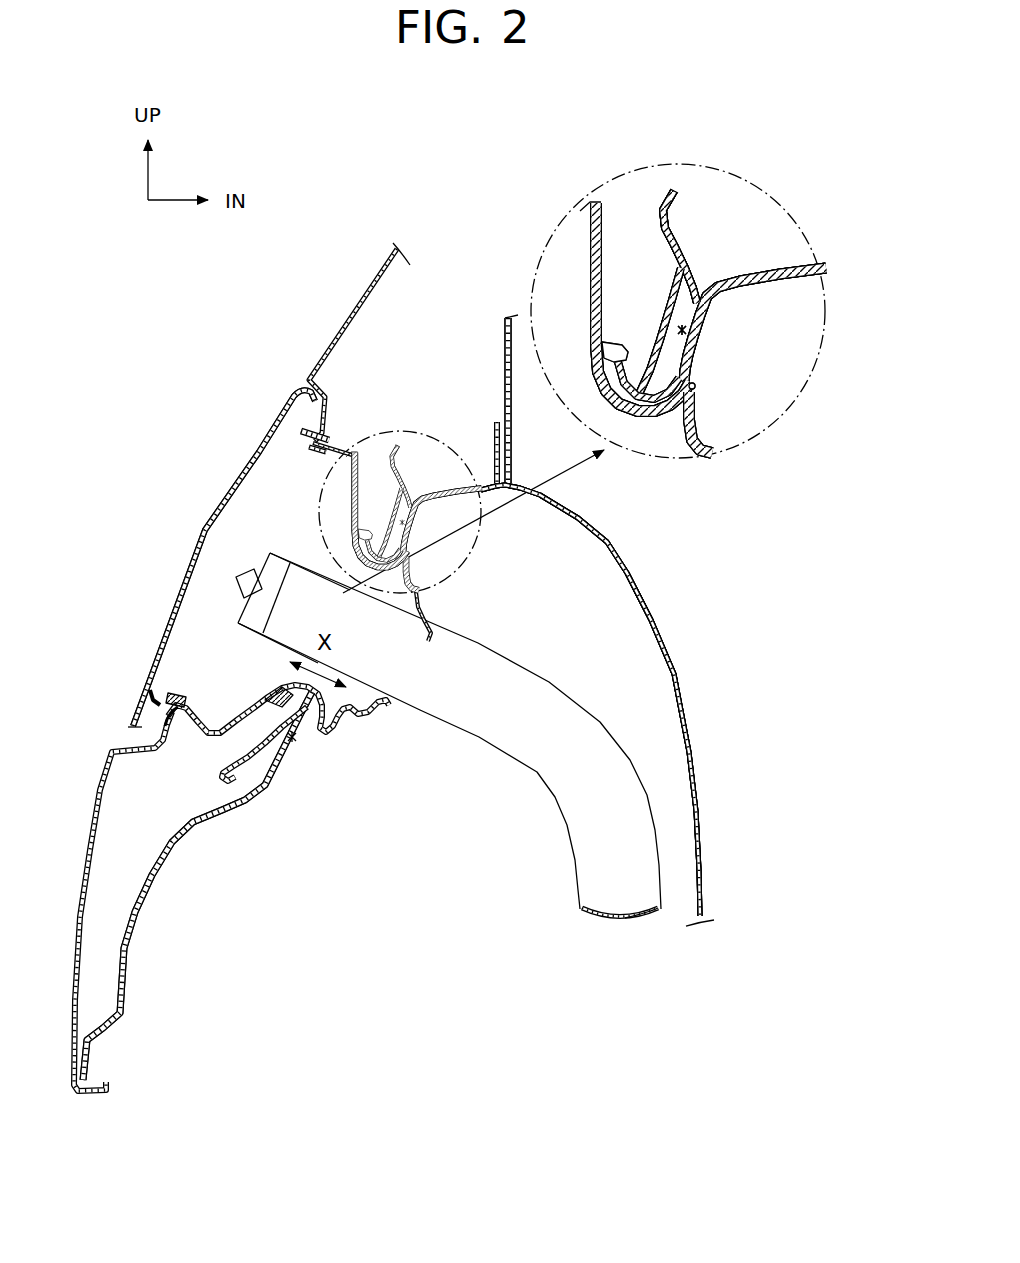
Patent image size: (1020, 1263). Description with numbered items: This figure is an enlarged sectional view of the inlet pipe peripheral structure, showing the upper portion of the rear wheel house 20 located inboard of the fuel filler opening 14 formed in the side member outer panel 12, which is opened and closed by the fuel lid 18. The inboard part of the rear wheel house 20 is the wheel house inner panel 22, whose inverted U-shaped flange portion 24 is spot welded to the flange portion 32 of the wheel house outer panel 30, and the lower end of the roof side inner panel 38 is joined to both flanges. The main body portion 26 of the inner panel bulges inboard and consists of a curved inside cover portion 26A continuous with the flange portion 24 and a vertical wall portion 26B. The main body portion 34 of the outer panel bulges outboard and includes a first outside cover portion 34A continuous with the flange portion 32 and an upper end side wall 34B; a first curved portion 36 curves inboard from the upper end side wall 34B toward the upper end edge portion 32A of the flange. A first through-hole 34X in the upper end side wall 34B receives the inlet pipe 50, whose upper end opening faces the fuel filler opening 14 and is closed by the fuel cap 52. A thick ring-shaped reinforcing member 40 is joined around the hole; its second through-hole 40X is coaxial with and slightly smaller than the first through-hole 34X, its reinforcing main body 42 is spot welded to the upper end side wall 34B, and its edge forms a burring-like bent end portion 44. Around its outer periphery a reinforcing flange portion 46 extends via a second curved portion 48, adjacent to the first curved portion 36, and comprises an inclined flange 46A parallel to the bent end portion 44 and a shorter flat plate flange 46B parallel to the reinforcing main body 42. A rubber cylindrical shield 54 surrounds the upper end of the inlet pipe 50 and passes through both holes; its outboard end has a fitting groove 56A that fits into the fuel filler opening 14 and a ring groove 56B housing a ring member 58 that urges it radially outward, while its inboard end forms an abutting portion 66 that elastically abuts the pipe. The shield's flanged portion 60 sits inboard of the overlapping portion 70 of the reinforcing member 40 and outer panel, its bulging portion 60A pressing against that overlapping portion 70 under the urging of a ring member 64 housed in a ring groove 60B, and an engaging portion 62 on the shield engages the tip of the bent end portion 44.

The side member outer panel 12 is at (336, 310).
The fuel filler opening 14 is at (182, 698).
The fuel lid 18 is at (207, 530).
The rear wheel house 20 is at (773, 510).
The wheel house inner panel 22 is at (736, 567).
The flange portion 24 is at (513, 447).
The main body portion 26 is at (670, 579).
The inside cover portion 26A is at (590, 522).
The vertical wall portion 26B is at (702, 799).
The wheel house outer panel 30 is at (297, 861).
The flange portion 32 is at (495, 440).
The upper end edge portion 32A is at (488, 462).
The main body portion 34 is at (195, 866).
The first outside cover portion 34A is at (447, 490).
The upper end side wall 34B is at (410, 528).
The first through-hole 34X is at (395, 585).
The first curved portion 36 is at (425, 505).
The roof side inner panel 38 is at (505, 330).
The reinforcing member 40 is at (377, 435).
The second through-hole 40X is at (370, 568).
The reinforcing main body 42 is at (390, 522).
The bent end portion 44 is at (360, 557).
The reinforcing flange portion 46 is at (698, 220).
The inclined flange 46A is at (686, 236).
The flat plate flange 46B is at (658, 185).
The second curved portion 48 is at (677, 282).
The inlet pipe 50 is at (478, 655).
The fuel cap 52 is at (266, 552).
The shield 54 is at (445, 592).
The fitting groove 56A is at (313, 430).
The ring groove 56B is at (270, 442).
The ring member 58 is at (300, 448).
The flanged portion 60 is at (425, 562).
The bulging portion 60A is at (697, 389).
The ring groove 60B is at (677, 405).
The engaging portion 62 is at (616, 350).
The ring member 64 is at (639, 401).
The abutting portion 66 is at (432, 625).
The overlapping portion 70 is at (702, 337).